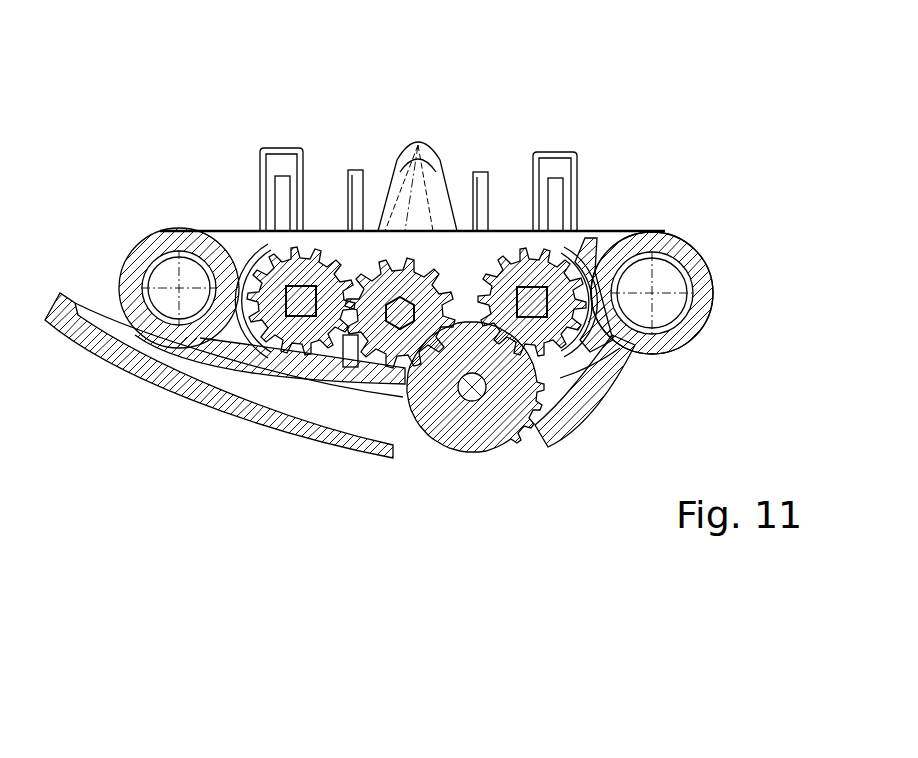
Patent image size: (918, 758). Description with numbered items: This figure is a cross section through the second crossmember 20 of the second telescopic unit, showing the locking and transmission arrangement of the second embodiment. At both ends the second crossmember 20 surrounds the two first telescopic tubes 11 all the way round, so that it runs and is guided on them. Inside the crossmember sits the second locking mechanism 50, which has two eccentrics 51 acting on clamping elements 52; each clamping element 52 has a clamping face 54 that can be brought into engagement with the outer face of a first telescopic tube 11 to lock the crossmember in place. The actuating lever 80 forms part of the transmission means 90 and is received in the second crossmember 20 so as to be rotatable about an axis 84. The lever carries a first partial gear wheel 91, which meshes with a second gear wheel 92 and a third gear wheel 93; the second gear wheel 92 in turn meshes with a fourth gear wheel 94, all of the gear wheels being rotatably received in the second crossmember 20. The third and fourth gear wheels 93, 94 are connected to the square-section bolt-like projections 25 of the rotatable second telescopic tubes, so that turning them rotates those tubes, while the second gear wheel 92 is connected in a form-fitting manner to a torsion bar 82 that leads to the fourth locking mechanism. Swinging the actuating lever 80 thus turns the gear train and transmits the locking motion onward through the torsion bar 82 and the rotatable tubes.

The telescopic tubes 11 is at (712, 300).
The second crossmember 20 is at (683, 237).
The bolt-like projections 25 is at (630, 236).
The second locking mechanism 50 is at (235, 231).
The eccentrics 51 is at (262, 252).
The clamping elements 52 is at (197, 231).
The clamping face 54 is at (190, 350).
The actuating lever 80 is at (243, 417).
The torsion bar 82 is at (403, 257).
The axis 84 is at (480, 410).
The transmission means 90 is at (578, 231).
The first partial gear wheel 91 is at (515, 388).
The second gear wheel 92 is at (427, 263).
The third gear wheel 93 is at (600, 318).
The fourth gear wheel 94 is at (312, 253).